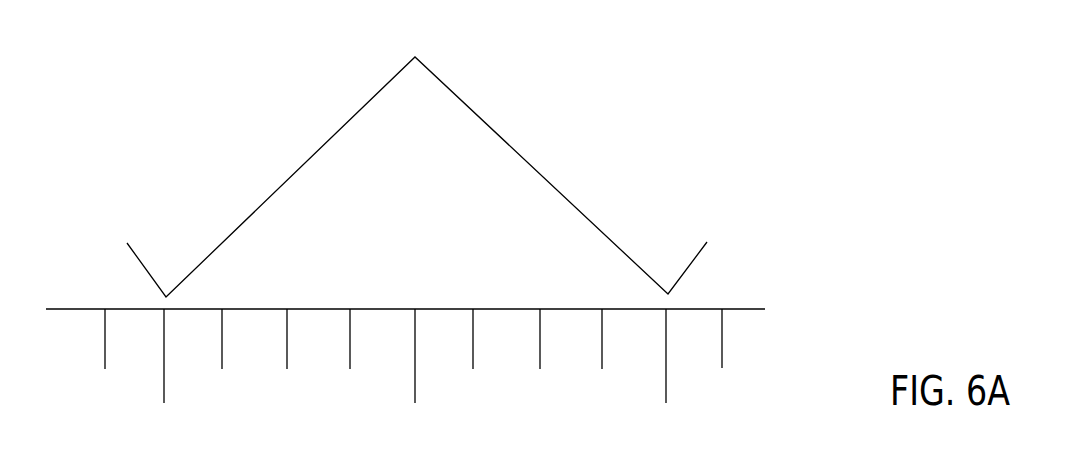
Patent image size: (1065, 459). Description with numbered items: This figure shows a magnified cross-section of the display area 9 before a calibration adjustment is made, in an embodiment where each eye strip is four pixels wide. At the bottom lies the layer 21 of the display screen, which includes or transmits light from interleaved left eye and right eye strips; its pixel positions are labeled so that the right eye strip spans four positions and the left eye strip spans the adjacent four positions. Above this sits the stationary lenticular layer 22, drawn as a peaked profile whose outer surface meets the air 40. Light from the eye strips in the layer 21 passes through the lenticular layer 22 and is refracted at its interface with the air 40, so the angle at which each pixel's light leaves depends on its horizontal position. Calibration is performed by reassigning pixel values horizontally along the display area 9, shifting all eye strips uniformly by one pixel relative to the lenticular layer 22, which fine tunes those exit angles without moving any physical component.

The display area 9 is at (424, 224).
The lenticular layer 22 is at (507, 139).
The layer of the display screen 21 is at (753, 301).
The air 40 is at (698, 45).